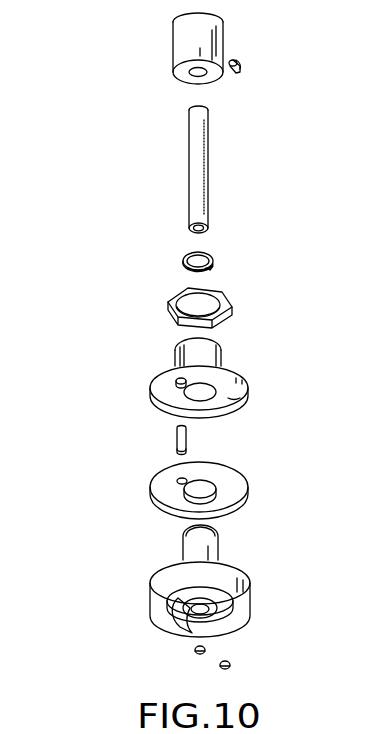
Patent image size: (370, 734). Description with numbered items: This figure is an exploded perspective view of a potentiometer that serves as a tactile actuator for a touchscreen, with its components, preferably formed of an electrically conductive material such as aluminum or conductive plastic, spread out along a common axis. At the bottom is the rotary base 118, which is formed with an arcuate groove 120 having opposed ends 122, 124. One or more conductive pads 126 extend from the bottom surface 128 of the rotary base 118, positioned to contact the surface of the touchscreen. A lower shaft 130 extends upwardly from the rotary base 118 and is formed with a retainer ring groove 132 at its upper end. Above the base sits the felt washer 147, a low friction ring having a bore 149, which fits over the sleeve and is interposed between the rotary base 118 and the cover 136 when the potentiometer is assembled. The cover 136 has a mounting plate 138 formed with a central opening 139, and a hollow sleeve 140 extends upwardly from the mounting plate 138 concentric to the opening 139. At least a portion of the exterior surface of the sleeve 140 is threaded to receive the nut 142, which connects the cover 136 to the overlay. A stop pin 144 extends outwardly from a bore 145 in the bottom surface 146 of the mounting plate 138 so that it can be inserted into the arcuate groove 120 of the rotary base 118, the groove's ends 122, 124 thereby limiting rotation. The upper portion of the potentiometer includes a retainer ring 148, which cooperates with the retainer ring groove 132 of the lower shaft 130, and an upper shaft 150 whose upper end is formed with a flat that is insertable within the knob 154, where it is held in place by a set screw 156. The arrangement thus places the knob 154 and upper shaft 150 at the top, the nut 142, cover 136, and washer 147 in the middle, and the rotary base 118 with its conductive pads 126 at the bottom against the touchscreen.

The rotary base 118 is at (121, 605).
The arcuate groove 120 is at (165, 590).
The end of arcuate groove 122 is at (180, 630).
The end of arcuate groove 124 is at (249, 614).
The conductive pads 126 is at (219, 665).
The bottom surface 128 is at (222, 622).
The lower shaft 130 is at (222, 548).
The retainer ring groove 132 is at (186, 528).
The cover 136 is at (131, 366).
The mounting plate 138 is at (248, 376).
The central opening 139 is at (204, 396).
The hollow sleeve 140 is at (212, 350).
The nut 142 is at (227, 300).
The stop pin 144 is at (176, 440).
The bore 145 is at (178, 386).
The bottom surface 146 is at (232, 393).
The felt washer 147 is at (248, 480).
The retainer ring 148 is at (184, 263).
The bore 149 is at (173, 482).
The upper shaft 150 is at (208, 162).
The knob 154 is at (172, 42).
The set screw 156 is at (238, 60).